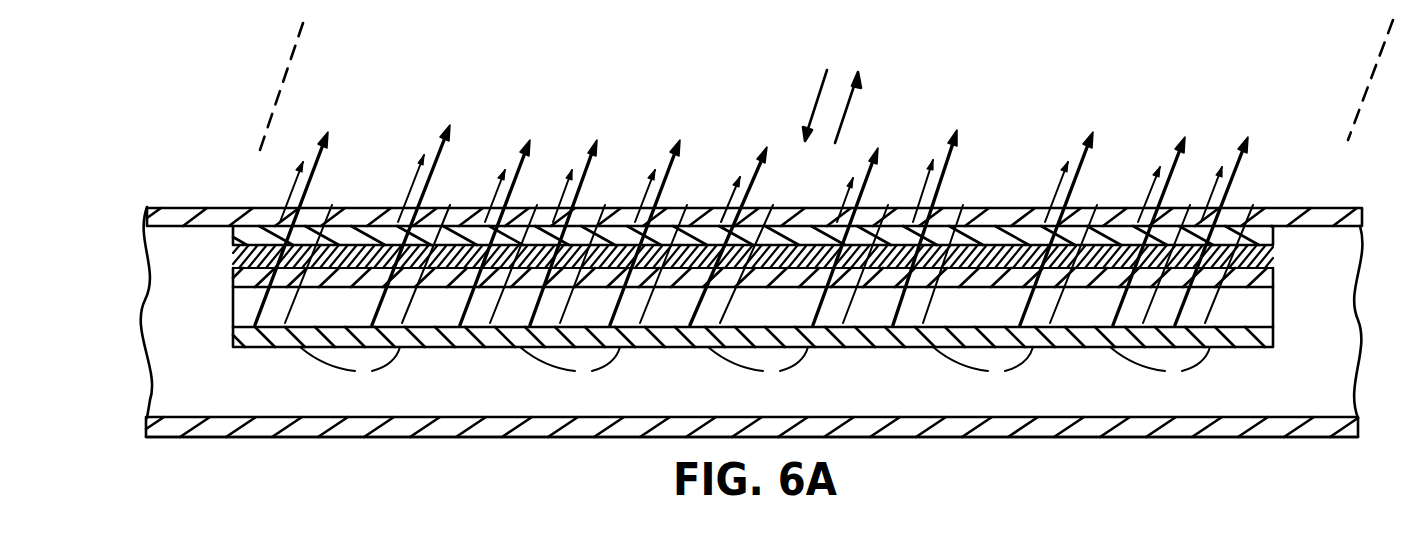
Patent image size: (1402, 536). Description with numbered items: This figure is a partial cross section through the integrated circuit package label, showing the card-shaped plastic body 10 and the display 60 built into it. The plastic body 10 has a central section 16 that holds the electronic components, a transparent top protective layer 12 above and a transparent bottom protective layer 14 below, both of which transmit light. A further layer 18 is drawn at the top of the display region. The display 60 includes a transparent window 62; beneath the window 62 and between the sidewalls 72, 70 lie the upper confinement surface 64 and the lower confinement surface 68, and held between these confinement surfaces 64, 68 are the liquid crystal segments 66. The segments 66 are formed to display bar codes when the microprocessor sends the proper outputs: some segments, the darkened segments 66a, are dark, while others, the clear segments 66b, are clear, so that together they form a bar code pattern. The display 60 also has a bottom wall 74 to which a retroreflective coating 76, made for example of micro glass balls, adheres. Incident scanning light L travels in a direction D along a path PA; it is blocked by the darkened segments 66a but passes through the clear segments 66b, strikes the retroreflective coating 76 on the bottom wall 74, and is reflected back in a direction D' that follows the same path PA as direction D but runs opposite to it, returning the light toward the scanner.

The plastic body 10 is at (232, 438).
The top protective layer 12 is at (147, 216).
The bottom protective layer 14 is at (200, 417).
The central section 16 is at (160, 320).
The top plate 18 is at (195, 208).
The display 60 is at (1073, 95).
The transparent window 62 is at (396, 207).
The upper confinement surface 64 is at (550, 206).
The liquid crystal segments 66 is at (1273, 255).
The darkened segments 66a is at (257, 207).
The clear segments 66b is at (755, 374).
The lower confinement surface 68 is at (540, 348).
The sidewall 70 is at (1273, 300).
The sidewall 72 is at (231, 300).
The bottom wall 74 is at (672, 348).
The retroreflective coating 76 is at (490, 348).
The incident scanning light L is at (304, 150).
The direction D is at (801, 102).
The direction D' is at (870, 101).
The path PA is at (263, 111).